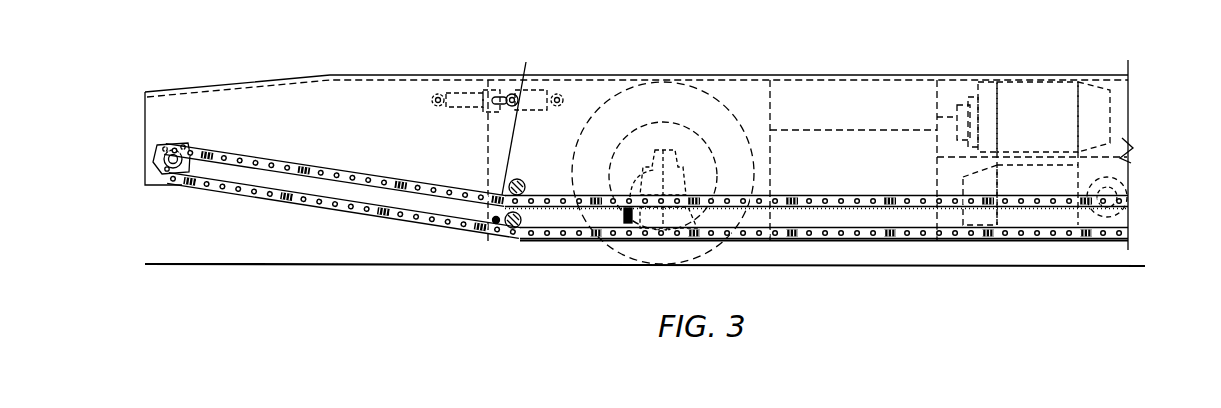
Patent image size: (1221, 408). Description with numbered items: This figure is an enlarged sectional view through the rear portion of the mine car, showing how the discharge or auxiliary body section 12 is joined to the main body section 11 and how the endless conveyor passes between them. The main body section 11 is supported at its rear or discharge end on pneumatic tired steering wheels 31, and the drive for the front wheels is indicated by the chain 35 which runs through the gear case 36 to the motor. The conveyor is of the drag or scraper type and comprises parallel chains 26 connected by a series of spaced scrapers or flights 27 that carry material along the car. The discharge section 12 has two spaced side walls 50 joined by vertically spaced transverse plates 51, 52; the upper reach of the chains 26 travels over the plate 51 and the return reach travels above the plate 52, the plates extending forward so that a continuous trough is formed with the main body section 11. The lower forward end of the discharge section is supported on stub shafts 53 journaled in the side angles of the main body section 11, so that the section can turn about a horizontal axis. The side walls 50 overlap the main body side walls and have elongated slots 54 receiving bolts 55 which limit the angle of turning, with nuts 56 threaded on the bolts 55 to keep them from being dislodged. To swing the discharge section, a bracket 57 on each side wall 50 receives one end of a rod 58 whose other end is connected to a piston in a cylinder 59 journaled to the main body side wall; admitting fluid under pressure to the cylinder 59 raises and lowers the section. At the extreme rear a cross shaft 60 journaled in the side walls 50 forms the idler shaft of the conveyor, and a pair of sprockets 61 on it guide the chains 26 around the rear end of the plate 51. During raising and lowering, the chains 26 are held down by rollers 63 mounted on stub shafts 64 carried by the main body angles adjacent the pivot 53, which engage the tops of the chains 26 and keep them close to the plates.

The main body section 11 is at (883, 71).
The discharge body section 12 is at (357, 69).
The chains 26 is at (749, 231).
The flights 27 is at (385, 207).
The steering wheels 31 is at (643, 263).
The chain 35 is at (1112, 177).
The gear case 36 is at (1058, 178).
The side walls 50 is at (331, 131).
The upper plate 51 is at (336, 152).
The lower plate 52 is at (324, 209).
The stub shafts 53 is at (496, 224).
The elongated slots 54 is at (497, 97).
The bolts 55 is at (529, 121).
The nuts 56 is at (515, 106).
The bracket 57 is at (438, 94).
The rod 58 is at (462, 107).
The cylinder 59 is at (547, 93).
The cross shaft 60 is at (173, 161).
The sprockets 61 is at (205, 148).
The rollers 63 is at (525, 186).
The stub shafts 64 is at (518, 180).